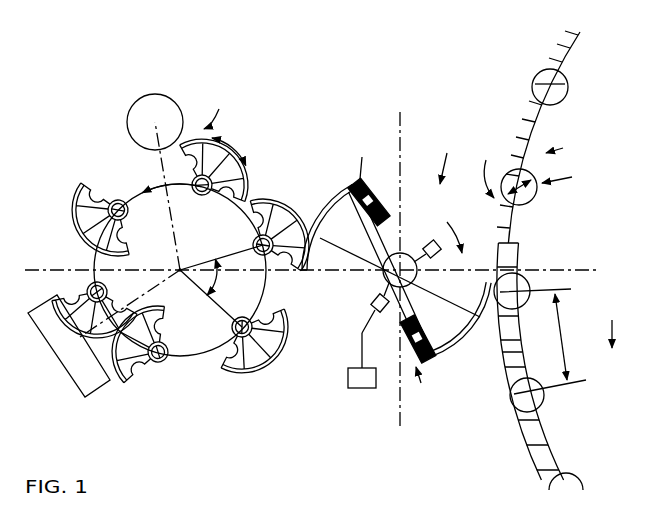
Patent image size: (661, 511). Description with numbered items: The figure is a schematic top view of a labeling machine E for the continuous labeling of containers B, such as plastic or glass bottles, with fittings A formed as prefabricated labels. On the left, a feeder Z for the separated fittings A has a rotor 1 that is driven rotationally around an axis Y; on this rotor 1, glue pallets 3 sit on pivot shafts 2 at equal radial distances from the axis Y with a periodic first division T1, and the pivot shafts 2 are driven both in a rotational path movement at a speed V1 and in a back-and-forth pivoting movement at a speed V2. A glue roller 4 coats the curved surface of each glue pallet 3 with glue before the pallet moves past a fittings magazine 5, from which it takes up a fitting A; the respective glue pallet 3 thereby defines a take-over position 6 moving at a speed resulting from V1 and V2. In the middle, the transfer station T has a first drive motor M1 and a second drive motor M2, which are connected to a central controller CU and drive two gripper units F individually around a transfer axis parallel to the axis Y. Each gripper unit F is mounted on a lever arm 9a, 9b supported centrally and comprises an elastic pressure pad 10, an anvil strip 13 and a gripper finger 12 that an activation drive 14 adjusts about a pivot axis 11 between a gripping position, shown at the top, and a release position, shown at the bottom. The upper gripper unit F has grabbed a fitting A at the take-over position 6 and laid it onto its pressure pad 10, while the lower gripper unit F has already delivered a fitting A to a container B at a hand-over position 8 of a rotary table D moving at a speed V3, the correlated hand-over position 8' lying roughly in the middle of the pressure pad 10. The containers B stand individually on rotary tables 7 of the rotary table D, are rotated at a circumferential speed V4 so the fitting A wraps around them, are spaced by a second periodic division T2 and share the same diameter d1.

The rotor 1 is at (187, 360).
The pivot shafts 2 is at (233, 365).
The glue pallets 3 is at (262, 362).
The glue roller 4 is at (172, 102).
The fittings magazine 5 is at (77, 369).
The take-over position 6 is at (258, 203).
The rotary tables 7 is at (535, 203).
The hand-over position 8 is at (527, 276).
The hand-over position 8' is at (460, 319).
The lever arm 9a is at (355, 254).
The lever arm 9b is at (418, 292).
The elastic pressure pad 10 is at (393, 271).
The pivot axis 11 is at (373, 183).
The gripper finger 12 is at (352, 186).
The anvil strip 13 is at (349, 200).
The activation drive 14 is at (401, 180).
The fittings A is at (316, 214).
The containers B is at (563, 178).
The central controller CU is at (362, 373).
The rotary table D is at (540, 260).
The labeling machine E is at (336, 78).
The gripper units F is at (394, 271).
The first drive motor M1 is at (383, 311).
The second drive motor M2 is at (429, 242).
The transfer station T is at (446, 159).
The first division T1 is at (214, 284).
The second division T2 is at (562, 336).
The speed V1 is at (138, 193).
The speed V2 is at (240, 147).
The speed V3 is at (613, 328).
The speed V4 is at (486, 160).
The axis Y is at (178, 269).
The feeder Z is at (214, 110).
The diameter d1 is at (532, 199).